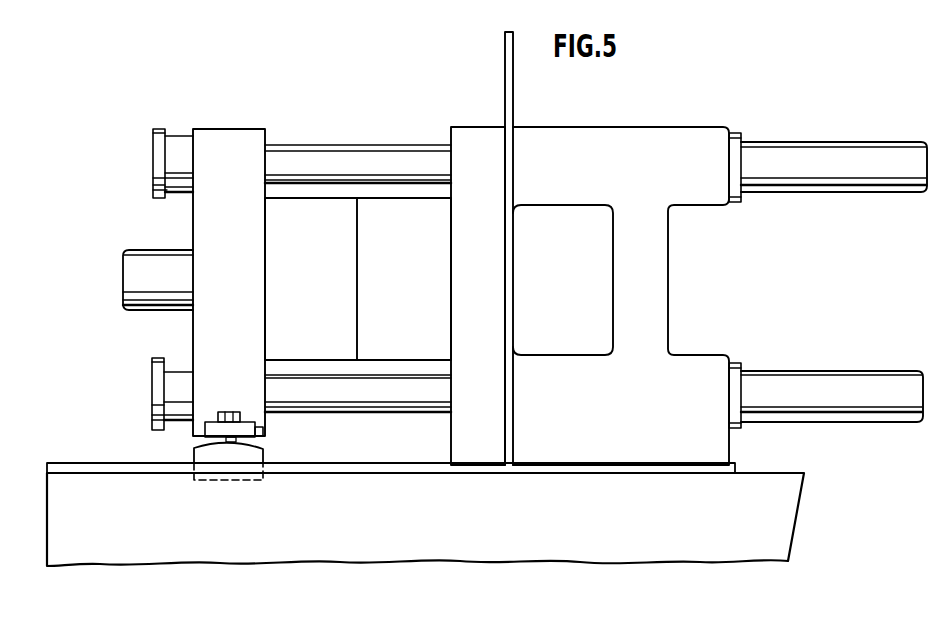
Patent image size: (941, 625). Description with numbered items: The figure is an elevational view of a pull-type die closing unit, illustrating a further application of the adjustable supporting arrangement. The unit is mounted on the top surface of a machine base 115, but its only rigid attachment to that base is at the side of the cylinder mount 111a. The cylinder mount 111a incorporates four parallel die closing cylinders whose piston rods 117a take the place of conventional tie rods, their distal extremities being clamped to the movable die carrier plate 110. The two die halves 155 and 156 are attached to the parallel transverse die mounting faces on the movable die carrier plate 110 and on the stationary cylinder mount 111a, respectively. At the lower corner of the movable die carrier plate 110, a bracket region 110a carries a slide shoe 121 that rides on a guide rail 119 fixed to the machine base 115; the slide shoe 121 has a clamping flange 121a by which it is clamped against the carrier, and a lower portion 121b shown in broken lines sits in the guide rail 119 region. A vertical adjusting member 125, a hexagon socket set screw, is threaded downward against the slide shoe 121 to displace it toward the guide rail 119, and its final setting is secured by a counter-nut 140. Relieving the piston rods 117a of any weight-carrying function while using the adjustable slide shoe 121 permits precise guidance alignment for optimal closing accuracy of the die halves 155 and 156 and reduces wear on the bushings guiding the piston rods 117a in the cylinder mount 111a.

The movable die carrier plate 110 is at (233, 150).
The bracket of movable platen 110a is at (215, 428).
The cylinder mount 111a is at (480, 155).
The machine base 115 is at (783, 515).
The piston rods 117a is at (352, 165).
The guide rail 119 is at (635, 465).
The slide shoe 121 is at (258, 452).
The clamping flange 121a is at (263, 432).
The anchor portion of support foot 121b is at (194, 480).
The vertical adjusting member 125 is at (229, 442).
The counter-nut 140 is at (229, 412).
The die half 155 is at (298, 223).
The die half 156 is at (404, 222).